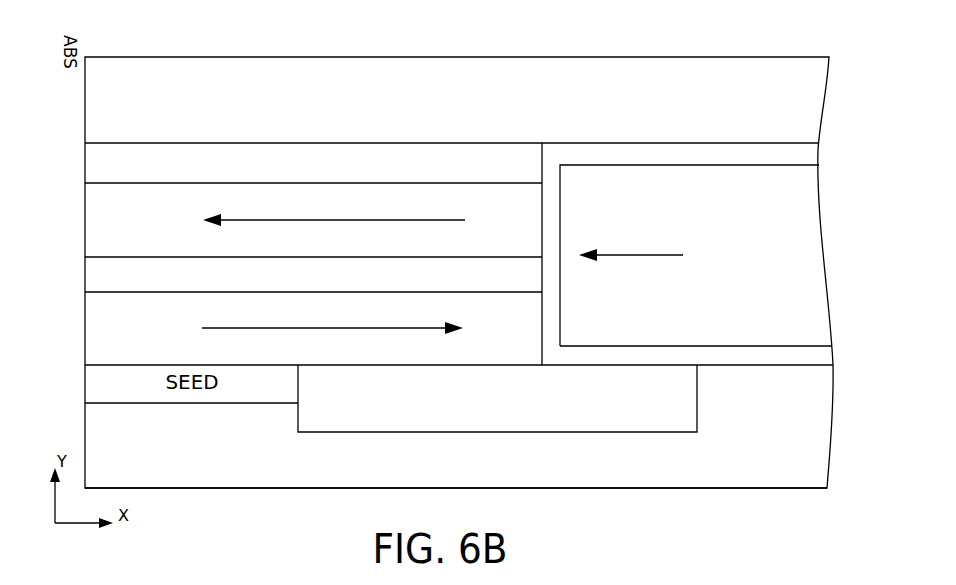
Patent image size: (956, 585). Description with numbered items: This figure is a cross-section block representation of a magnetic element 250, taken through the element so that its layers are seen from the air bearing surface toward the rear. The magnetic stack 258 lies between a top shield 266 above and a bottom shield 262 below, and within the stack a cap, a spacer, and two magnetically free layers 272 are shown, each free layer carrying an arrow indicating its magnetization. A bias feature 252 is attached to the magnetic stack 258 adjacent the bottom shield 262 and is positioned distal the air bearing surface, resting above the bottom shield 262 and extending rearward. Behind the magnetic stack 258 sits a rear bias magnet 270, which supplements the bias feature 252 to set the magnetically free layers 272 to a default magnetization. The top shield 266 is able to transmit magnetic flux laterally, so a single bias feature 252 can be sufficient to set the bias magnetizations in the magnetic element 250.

The magnetic element 250 is at (765, 46).
The top shield 266 is at (451, 103).
The magnetic stack 258 is at (76, 293).
The magnetically free layers 272 is at (281, 272).
The rear bias magnet 270 is at (696, 255).
The bias feature 252 is at (497, 398).
The bottom shield 262 is at (456, 469).